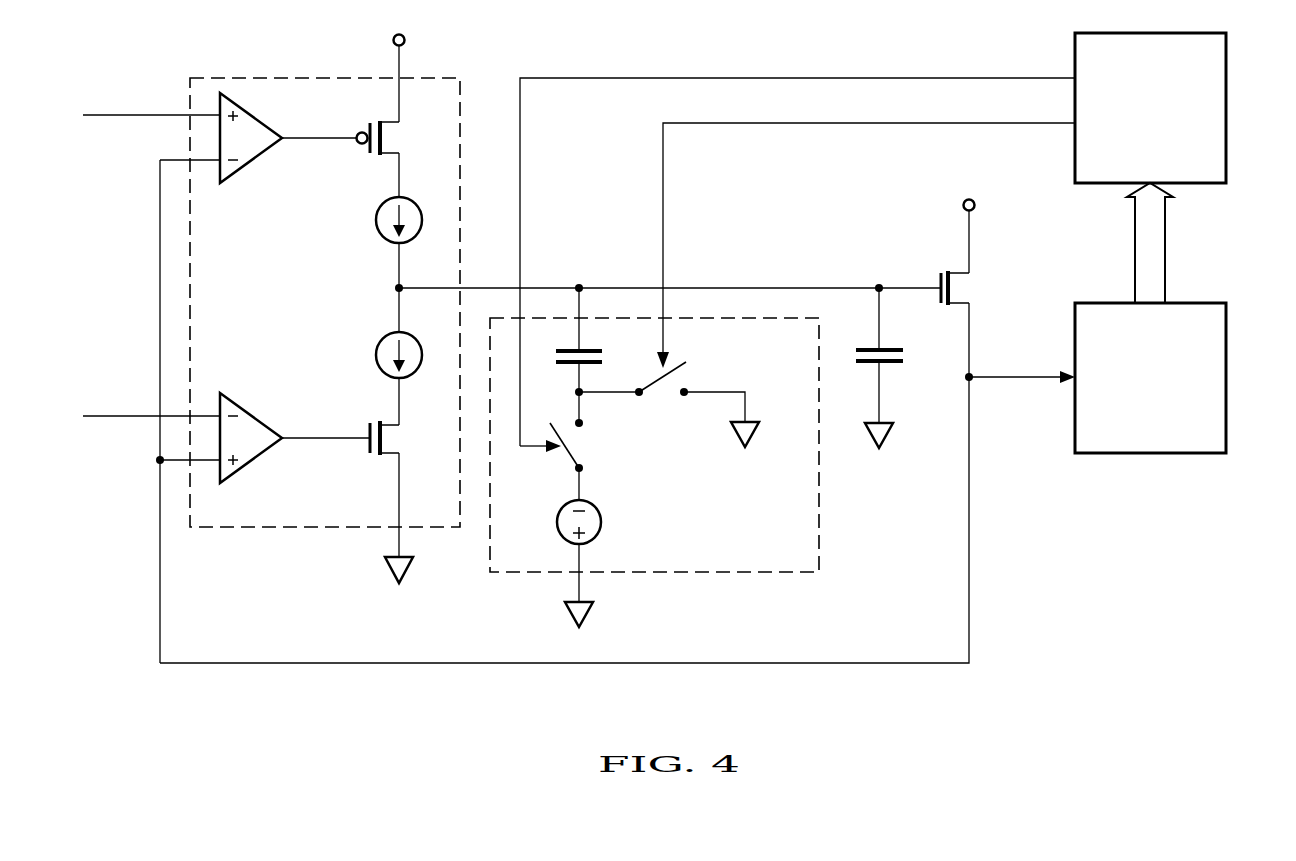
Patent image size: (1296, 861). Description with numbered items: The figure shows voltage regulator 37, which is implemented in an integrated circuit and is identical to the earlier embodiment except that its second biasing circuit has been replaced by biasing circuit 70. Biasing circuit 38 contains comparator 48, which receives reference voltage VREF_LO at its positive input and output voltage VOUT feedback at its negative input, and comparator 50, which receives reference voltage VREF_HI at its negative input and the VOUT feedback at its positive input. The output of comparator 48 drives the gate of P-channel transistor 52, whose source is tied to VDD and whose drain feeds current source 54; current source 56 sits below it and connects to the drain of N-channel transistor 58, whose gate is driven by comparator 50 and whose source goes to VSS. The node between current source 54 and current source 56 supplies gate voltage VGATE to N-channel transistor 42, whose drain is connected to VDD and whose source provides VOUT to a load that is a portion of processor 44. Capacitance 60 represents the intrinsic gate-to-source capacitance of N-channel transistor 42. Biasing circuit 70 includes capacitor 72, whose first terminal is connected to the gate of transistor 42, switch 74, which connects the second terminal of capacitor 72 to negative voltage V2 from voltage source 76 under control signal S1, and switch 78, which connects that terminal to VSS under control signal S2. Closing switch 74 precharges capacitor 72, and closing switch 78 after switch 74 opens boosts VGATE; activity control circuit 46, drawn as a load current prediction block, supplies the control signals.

The voltage regulator 37 is at (1108, 646).
The biasing circuit 38 is at (257, 77).
The N-channel transistor 42 is at (957, 285).
The processor 44 is at (1135, 430).
The activity control circuit 46 is at (1226, 80).
The comparator 48 is at (253, 160).
The comparator 50 is at (248, 407).
The P-channel transistor 52 is at (388, 135).
The current source 54 is at (377, 220).
The current source 56 is at (377, 355).
The N-channel transistor 58 is at (388, 435).
The capacitance 60 is at (895, 365).
The biasing circuit 70 is at (819, 520).
The capacitor 72 is at (563, 367).
The switch 74 is at (573, 447).
The voltage source 76 is at (557, 520).
The switch 78 is at (662, 387).